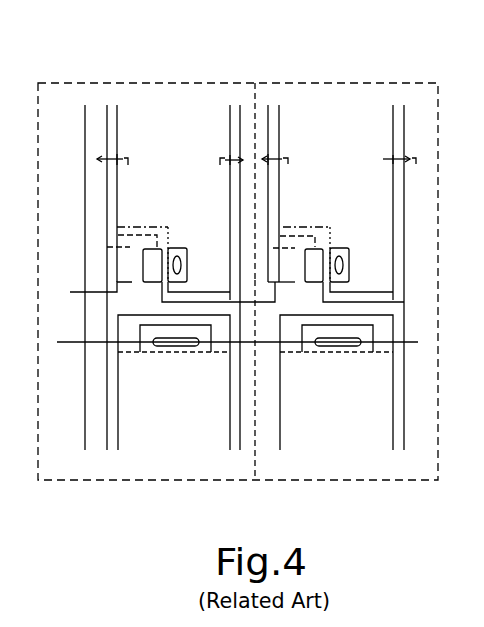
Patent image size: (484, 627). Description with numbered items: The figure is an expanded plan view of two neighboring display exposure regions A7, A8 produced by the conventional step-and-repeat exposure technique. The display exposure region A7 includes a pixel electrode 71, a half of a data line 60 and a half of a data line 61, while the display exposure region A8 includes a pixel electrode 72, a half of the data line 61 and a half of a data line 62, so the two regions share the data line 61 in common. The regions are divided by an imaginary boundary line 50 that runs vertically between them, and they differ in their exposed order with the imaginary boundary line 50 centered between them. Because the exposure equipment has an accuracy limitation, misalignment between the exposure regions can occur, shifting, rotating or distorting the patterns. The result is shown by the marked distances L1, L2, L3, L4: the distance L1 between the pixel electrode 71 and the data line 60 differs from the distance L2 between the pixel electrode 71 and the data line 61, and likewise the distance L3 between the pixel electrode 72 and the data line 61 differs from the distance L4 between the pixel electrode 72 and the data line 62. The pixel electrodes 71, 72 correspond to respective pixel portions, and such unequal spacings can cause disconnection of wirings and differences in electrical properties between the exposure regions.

The imaginary boundary line 50 is at (259, 112).
The data line 60 is at (93, 417).
The data line 61 is at (255, 440).
The data line 62 is at (417, 442).
The pixel electrode 71 is at (193, 110).
The pixel electrode 72 is at (360, 110).
The display exposure region A7 is at (163, 480).
The display exposure region A8 is at (338, 480).
The first distance L1 is at (118, 174).
The second distance L2 is at (229, 171).
The third distance L3 is at (278, 171).
The fourth distance L4 is at (403, 171).